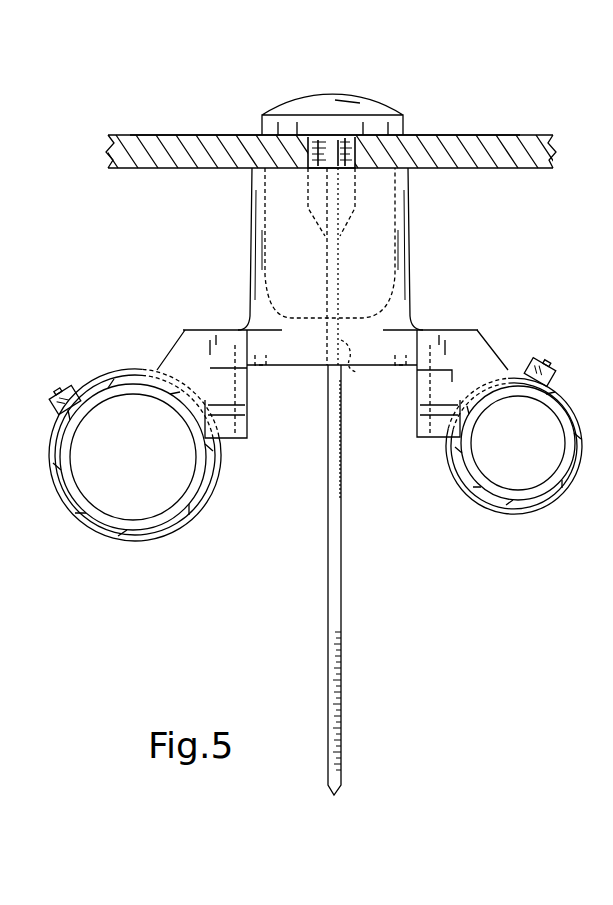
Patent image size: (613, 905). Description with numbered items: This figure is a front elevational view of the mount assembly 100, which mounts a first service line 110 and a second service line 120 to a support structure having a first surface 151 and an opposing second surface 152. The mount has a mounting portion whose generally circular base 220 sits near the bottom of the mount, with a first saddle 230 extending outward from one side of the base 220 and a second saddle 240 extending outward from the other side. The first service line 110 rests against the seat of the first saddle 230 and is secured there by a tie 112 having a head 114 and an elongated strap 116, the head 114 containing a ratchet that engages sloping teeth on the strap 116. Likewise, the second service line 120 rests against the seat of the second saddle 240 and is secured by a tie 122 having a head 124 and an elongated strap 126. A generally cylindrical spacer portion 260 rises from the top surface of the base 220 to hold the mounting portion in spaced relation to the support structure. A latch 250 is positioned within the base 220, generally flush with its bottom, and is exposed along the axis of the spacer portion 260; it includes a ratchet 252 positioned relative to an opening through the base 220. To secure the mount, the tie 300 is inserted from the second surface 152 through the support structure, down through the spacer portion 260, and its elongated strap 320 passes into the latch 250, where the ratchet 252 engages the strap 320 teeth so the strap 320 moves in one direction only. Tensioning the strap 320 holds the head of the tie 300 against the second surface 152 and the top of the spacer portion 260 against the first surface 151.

The mount assembly 100 is at (397, 600).
The first service line 110 is at (130, 527).
The tie 112 is at (113, 372).
The head 114 is at (66, 391).
The elongated strap 116 is at (193, 508).
The second service line 120 is at (522, 485).
The tie 122 is at (580, 405).
The head 124 is at (547, 362).
The elongated strap 126 is at (557, 483).
The first surface 151 is at (160, 175).
The second surface 152 is at (155, 128).
The base 220 is at (405, 340).
The first saddle 230 is at (175, 335).
The second saddle 240 is at (490, 338).
The latch 250 is at (355, 392).
The ratchet 252 is at (356, 352).
The spacer portion 260 is at (418, 250).
The tie 300 is at (420, 113).
The elongated strap 320 is at (335, 568).